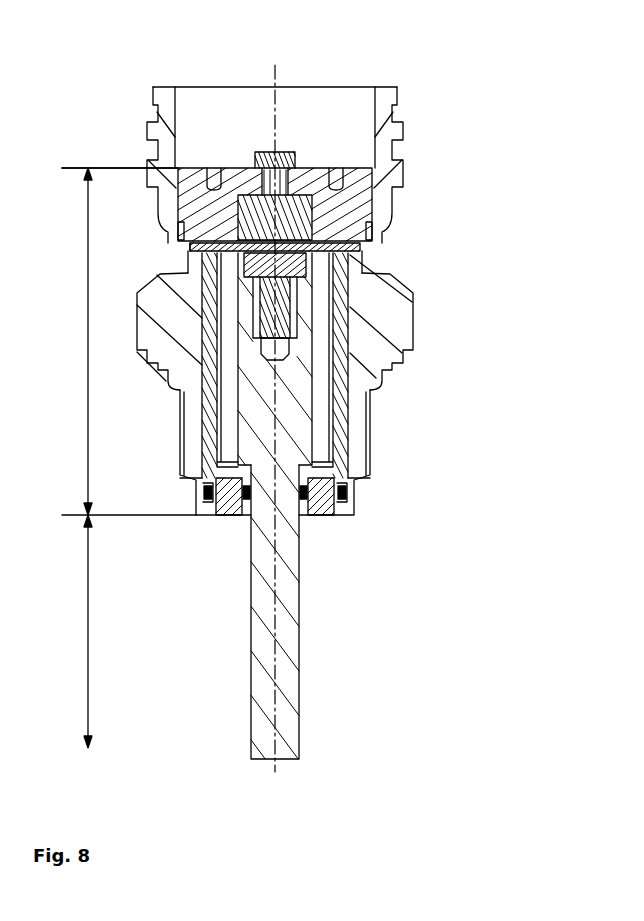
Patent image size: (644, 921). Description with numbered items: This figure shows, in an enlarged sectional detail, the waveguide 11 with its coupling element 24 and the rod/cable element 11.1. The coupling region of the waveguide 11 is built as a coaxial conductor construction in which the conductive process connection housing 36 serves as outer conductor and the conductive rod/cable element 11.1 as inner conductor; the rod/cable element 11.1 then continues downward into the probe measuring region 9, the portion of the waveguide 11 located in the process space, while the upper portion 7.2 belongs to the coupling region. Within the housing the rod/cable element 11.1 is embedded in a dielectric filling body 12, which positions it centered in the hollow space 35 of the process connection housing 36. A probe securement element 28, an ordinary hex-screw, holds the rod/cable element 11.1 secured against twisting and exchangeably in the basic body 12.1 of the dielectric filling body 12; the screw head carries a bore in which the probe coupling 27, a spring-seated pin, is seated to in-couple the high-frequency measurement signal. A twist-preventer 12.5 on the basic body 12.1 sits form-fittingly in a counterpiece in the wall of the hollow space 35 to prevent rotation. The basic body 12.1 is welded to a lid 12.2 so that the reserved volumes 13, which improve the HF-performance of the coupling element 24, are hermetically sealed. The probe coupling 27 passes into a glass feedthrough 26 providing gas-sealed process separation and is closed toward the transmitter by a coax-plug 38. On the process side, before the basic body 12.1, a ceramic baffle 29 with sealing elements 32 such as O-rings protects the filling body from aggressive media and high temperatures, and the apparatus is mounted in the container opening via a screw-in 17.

The waveguide 11 is at (467, 53).
The rod/cable element 11.1 is at (292, 622).
The upper region length 7.2 is at (88, 290).
The probe measuring region 9 is at (88, 628).
The dielectric filling body 12 is at (218, 360).
The basic body 12.1 is at (210, 450).
The lid 12.2 is at (200, 246).
The twist-preventer 12.5 is at (188, 270).
The reserved volumes 13 is at (318, 397).
The screw-in 17 is at (375, 437).
The coupling element 24 is at (456, 226).
The glass feedthrough 26 is at (320, 210).
The probe coupling 27 is at (362, 248).
The probe securement element 28 is at (290, 308).
The baffle 29 is at (325, 497).
The sealing elements 32 is at (180, 232).
The hollow space 35 is at (201, 334).
The process connection housing 36 is at (395, 338).
The coax-plug 38 is at (286, 156).